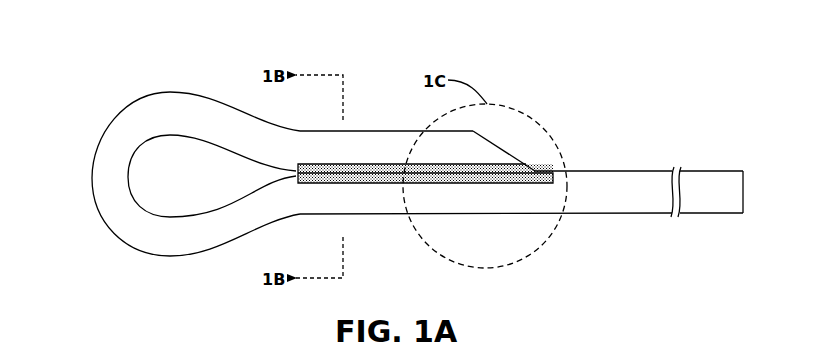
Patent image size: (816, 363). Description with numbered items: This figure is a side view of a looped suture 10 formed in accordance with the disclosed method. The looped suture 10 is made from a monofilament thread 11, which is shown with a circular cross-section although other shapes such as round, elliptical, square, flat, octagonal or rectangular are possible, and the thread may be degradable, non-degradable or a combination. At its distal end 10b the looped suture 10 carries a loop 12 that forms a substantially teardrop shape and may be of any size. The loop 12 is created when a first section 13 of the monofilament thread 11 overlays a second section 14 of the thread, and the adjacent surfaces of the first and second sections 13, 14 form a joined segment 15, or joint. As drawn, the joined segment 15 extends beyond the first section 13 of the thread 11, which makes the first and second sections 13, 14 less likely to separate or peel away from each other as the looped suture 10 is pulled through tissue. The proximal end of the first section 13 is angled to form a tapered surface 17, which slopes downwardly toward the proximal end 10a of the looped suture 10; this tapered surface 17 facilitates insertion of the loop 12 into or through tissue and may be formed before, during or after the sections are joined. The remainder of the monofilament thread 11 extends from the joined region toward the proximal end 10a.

The looped suture 10 is at (140, 62).
The proximal end 10a is at (703, 213).
The distal end 10b is at (433, 213).
The monofilament thread 11 is at (615, 171).
The loop 12 is at (102, 178).
The first section 13 is at (345, 146).
The second section 14 is at (355, 202).
The joined segment 15 is at (348, 174).
The tapered surface 17 is at (503, 145).